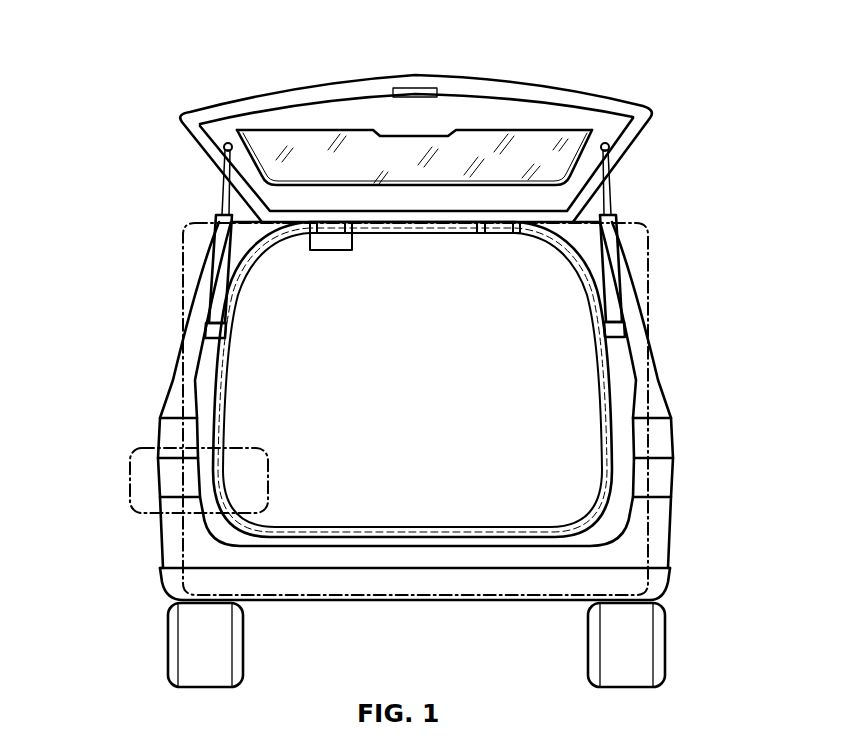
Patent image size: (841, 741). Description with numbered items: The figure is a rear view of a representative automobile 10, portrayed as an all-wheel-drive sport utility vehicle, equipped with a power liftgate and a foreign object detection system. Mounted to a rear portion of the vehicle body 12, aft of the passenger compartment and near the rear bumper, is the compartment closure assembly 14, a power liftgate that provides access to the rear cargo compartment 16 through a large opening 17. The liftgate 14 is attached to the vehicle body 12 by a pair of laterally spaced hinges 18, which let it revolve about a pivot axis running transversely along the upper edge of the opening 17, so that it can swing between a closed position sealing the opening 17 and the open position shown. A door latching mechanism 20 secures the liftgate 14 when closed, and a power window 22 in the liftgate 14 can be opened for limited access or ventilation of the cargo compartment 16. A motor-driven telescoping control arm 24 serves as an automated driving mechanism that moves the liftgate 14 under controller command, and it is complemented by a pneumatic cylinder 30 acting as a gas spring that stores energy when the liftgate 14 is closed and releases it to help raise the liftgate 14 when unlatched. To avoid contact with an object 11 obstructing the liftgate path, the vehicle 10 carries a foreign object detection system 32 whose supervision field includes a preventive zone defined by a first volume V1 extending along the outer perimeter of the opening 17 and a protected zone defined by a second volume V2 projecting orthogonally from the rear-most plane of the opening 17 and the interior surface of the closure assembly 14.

The automobile 10 is at (142, 54).
The object 11 is at (130, 463).
The vehicle body 12 is at (677, 469).
The compartment closure assembly 14 is at (468, 75).
The rear cargo compartment 16 is at (600, 386).
The opening 17 is at (600, 408).
The hinges 18 is at (352, 235).
The door latching mechanism 20 is at (393, 88).
The power window 22 is at (403, 173).
The motor-driven telescoping control arm 24 is at (222, 167).
The pneumatic cylinder 30 is at (612, 171).
The foreign object detection system 32 is at (317, 250).
The first volume V1 is at (648, 547).
The second volume V2 is at (604, 497).